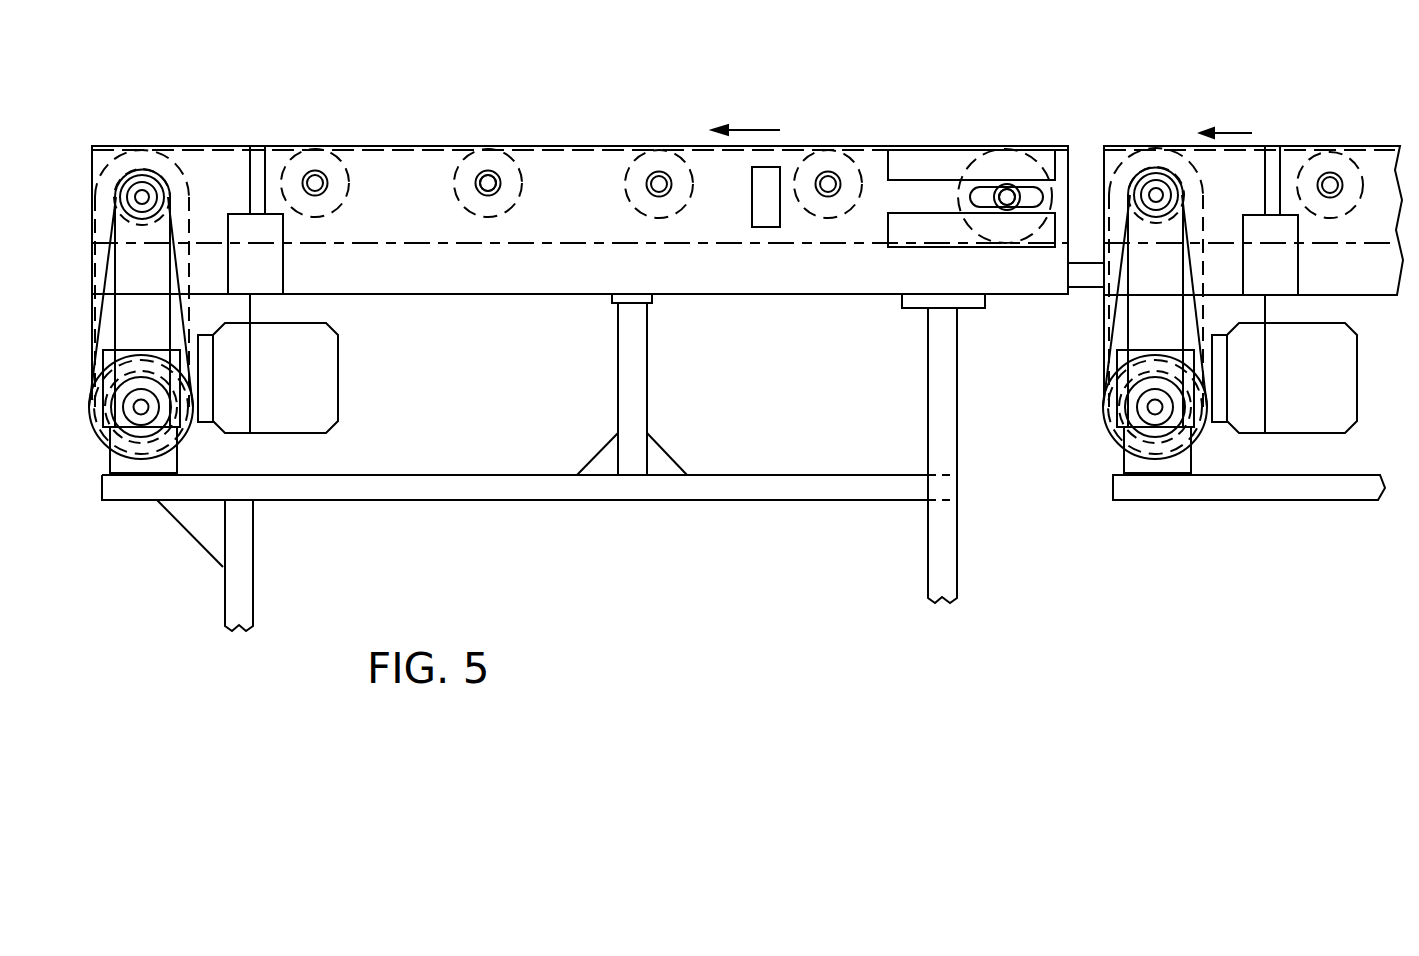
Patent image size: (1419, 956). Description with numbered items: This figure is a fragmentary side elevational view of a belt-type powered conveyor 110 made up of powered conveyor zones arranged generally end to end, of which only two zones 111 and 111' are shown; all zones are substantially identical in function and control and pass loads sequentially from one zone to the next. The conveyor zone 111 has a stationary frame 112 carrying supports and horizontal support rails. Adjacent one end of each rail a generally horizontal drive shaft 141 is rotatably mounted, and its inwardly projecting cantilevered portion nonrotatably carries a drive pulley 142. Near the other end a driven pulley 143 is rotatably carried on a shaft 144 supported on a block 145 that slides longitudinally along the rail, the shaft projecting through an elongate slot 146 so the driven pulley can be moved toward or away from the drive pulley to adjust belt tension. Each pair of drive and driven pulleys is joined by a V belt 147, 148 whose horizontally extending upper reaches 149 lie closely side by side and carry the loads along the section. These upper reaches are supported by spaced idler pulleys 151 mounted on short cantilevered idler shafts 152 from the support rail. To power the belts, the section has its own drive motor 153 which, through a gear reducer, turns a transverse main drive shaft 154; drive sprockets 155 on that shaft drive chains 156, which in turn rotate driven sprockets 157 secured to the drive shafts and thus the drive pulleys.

The powered conveyor 110 is at (867, 83).
The conveyor zone 111 is at (598, 345).
The conveyor zone 111' is at (1253, 285).
The stationary frame 112 is at (445, 490).
The drive shaft 141 is at (168, 178).
The drive pulley 142 is at (130, 160).
The driven pulley 143 is at (992, 163).
The shaft 144 is at (1010, 187).
The block 145 is at (942, 160).
The elongate slot 146 is at (1032, 203).
The V belt 147 is at (502, 317).
The V belt 148 is at (478, 243).
The upper reach 149 is at (612, 148).
The idler pulley 151 is at (340, 160).
The idler shaft 152 is at (495, 190).
The drive motor 153 is at (323, 410).
The main drive shaft 154 is at (141, 407).
The drive sprocket 155 is at (95, 440).
The drive chain 156 is at (100, 295).
The driven sprocket 157 is at (148, 180).